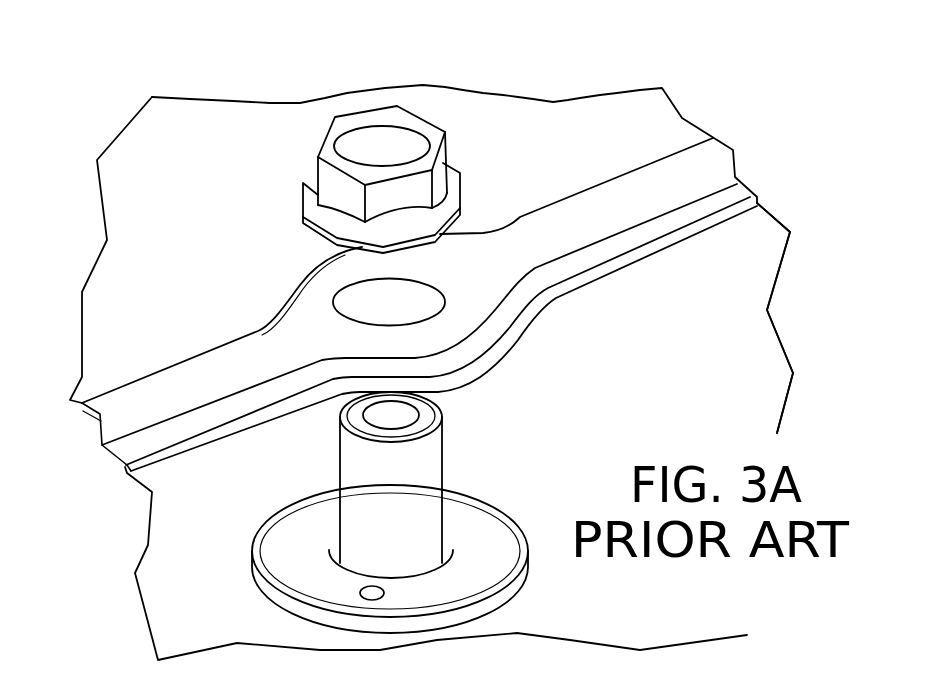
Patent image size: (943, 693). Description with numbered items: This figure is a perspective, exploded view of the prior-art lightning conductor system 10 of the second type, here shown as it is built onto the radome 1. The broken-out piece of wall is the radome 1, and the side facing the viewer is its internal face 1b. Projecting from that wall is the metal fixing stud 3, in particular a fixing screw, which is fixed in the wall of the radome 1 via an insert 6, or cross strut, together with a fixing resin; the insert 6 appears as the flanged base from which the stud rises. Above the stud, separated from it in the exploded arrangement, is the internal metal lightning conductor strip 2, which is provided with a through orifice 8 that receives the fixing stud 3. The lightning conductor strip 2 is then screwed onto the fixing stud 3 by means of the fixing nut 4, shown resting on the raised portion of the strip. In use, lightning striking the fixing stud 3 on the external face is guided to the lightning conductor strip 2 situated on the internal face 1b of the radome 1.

The lightning conductor system 10 is at (86, 111).
The radome 1 is at (158, 571).
The internal face 1b is at (747, 287).
The lightning conductor strip 2 is at (620, 197).
The fixing nut 4 is at (333, 190).
The through orifice 8 is at (370, 300).
The fixing stud 3 is at (422, 468).
The insert 6 is at (442, 587).